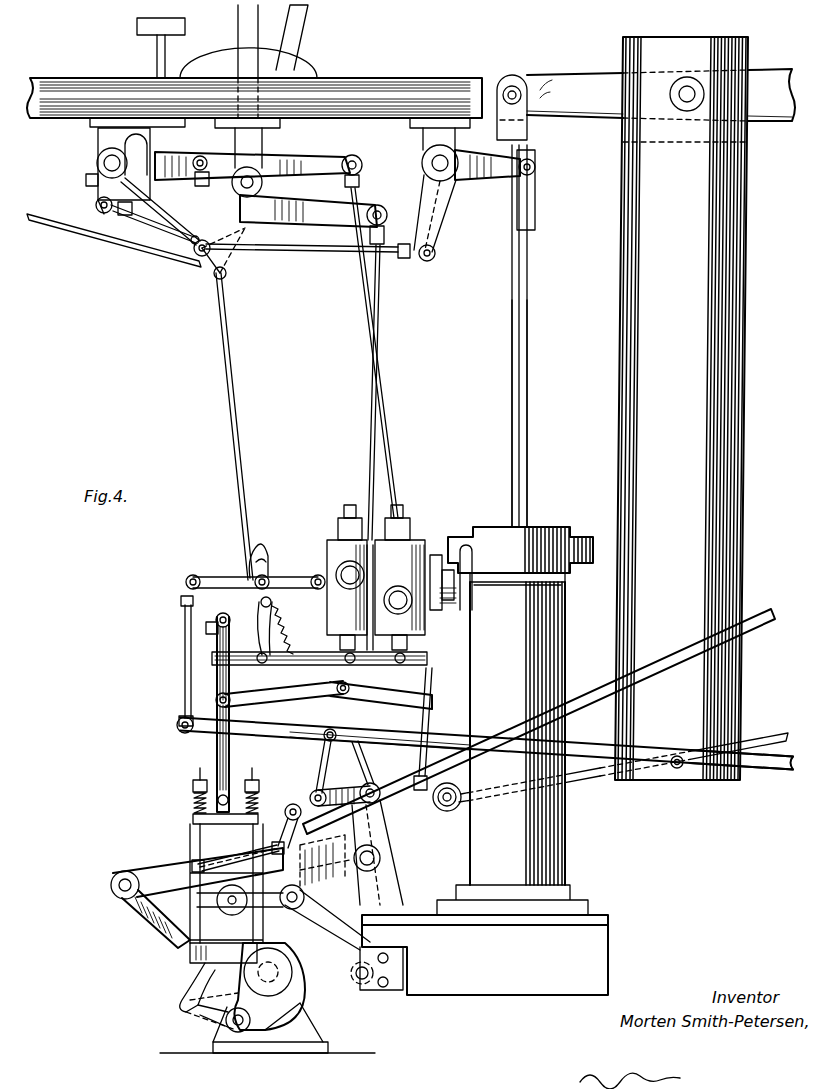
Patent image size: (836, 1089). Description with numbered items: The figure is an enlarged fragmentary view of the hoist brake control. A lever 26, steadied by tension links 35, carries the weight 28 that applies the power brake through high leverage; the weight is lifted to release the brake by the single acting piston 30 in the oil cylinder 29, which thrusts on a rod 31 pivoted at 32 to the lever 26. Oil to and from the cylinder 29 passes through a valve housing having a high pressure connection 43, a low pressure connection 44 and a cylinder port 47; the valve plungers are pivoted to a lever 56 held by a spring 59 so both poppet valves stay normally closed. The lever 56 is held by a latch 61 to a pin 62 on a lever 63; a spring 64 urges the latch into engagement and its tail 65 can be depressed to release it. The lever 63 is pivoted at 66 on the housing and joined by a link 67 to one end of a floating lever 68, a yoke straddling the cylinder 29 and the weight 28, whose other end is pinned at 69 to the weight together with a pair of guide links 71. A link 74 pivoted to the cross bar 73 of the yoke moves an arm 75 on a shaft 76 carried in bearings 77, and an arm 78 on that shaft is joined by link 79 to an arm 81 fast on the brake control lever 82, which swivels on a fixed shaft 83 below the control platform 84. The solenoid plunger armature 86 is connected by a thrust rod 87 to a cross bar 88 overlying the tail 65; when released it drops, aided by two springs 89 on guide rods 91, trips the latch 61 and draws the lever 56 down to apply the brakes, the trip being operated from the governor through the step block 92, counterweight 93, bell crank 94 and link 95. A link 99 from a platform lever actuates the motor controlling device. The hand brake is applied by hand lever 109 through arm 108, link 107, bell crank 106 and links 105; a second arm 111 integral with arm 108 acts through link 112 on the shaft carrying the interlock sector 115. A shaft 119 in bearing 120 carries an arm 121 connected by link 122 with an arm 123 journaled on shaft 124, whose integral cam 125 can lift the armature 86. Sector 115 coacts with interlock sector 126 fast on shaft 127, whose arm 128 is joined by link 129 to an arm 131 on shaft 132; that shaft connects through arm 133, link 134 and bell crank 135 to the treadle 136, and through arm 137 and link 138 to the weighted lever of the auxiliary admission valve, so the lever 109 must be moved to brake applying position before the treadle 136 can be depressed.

The lever 26 is at (661, 95).
The weight 28 is at (681, 408).
The oil cylinder 29 is at (517, 733).
The single acting piston 30 is at (543, 527).
The rod 31 is at (521, 385).
The pivot 32 is at (516, 86).
The tension links 35 is at (210, 928).
The high pressure connection 43 is at (437, 600).
The low pressure connection 44 is at (347, 556).
The cylinder port 47 is at (418, 545).
The lever 56 is at (322, 661).
The spring 59 is at (360, 620).
The latch 61 is at (274, 613).
The pin 62 is at (271, 577).
The lever 63 is at (215, 578).
The spring 64 is at (292, 641).
The tail 65 is at (221, 617).
The pivot 66 is at (318, 575).
The link 67 is at (184, 666).
The floating lever 68 is at (298, 728).
The pin 69 is at (677, 755).
The guide links 71 is at (770, 768).
The cross bar 73 is at (333, 729).
The link 74 is at (324, 758).
The arm 75 is at (338, 792).
The shaft 76 is at (374, 787).
The bearings 77 is at (363, 787).
The arm 78 is at (418, 792).
The link 79 is at (424, 730).
The arm 81 is at (312, 164).
The brake control lever 82 is at (240, 32).
The fixed shaft 83 is at (262, 168).
The control platform 84 is at (254, 103).
The plunger armature 86 is at (263, 953).
The thrust rod 87 is at (230, 760).
The cross bar 88 is at (216, 628).
The springs 89 is at (195, 802).
The guide rods 91 is at (207, 827).
The step block 92 is at (207, 853).
The counterweight 93 is at (237, 907).
The bell crank 94 is at (325, 867).
The link 95 is at (587, 698).
The link 99 is at (116, 249).
The links 105 is at (589, 783).
The bell crank 106 is at (136, 905).
The link 107 is at (378, 297).
The arm 108 is at (316, 222).
The brake applying hand lever 109 is at (300, 38).
The second arm 111 is at (198, 256).
The link 112 is at (150, 203).
The interlock block 115 is at (140, 133).
The shaft 119 is at (382, 858).
The bearing 120 is at (377, 933).
The arm 121 is at (296, 805).
The link 122 is at (192, 967).
The arm 123 is at (190, 1009).
The shaft 124 is at (240, 1034).
The cam 125 is at (240, 905).
The interlock sector 126 is at (90, 178).
The shaft 127 is at (100, 160).
The arm 128 is at (98, 190).
The link 129 is at (144, 216).
The arm 131 is at (418, 201).
The shaft 132 is at (431, 161).
The arm 133 is at (436, 242).
The link 134 is at (351, 247).
The bell crank 135 is at (212, 162).
The treadle 136 is at (146, 36).
The arm 137 is at (486, 180).
The link 138 is at (530, 286).